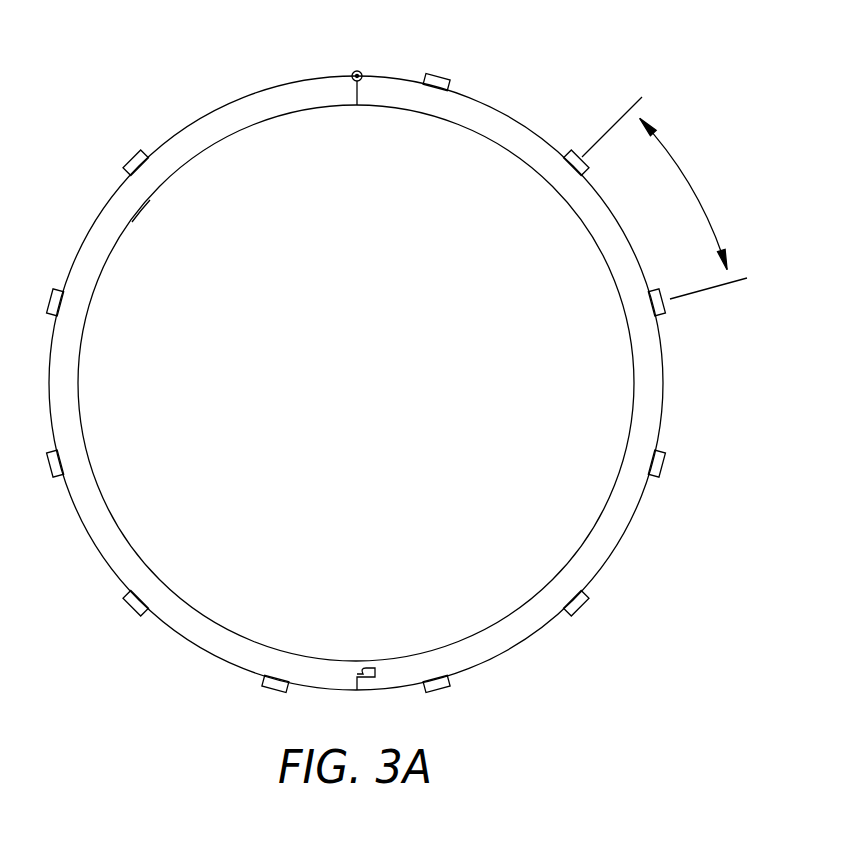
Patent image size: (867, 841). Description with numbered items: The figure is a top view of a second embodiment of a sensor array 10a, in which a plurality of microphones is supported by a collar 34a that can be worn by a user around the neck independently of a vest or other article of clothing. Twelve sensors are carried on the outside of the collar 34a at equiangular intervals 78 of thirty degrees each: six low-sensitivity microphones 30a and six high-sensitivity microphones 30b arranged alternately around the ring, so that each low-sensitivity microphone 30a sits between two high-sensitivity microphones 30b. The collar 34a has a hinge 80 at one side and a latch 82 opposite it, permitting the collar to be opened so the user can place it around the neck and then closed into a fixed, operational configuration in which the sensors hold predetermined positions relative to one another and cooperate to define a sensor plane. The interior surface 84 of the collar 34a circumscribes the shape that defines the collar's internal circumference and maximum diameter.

The sensor array 10a is at (407, 394).
The low-sensitivity microphones 30a is at (443, 70).
The high-sensitivity microphones 30b is at (585, 148).
The collar 34a is at (617, 553).
The equiangular intervals 78 is at (697, 190).
The hinge 80 is at (359, 71).
The latch 82 is at (362, 672).
The interior surface 84 is at (132, 222).